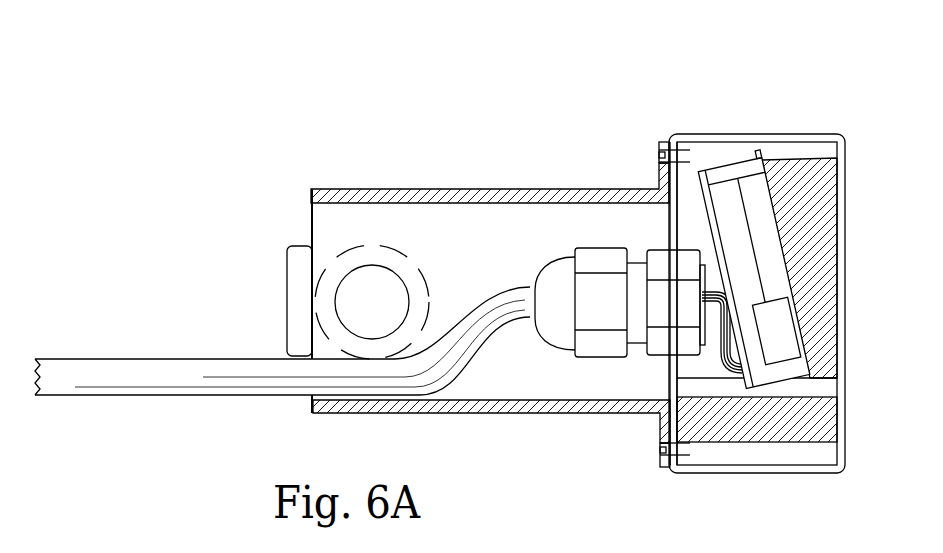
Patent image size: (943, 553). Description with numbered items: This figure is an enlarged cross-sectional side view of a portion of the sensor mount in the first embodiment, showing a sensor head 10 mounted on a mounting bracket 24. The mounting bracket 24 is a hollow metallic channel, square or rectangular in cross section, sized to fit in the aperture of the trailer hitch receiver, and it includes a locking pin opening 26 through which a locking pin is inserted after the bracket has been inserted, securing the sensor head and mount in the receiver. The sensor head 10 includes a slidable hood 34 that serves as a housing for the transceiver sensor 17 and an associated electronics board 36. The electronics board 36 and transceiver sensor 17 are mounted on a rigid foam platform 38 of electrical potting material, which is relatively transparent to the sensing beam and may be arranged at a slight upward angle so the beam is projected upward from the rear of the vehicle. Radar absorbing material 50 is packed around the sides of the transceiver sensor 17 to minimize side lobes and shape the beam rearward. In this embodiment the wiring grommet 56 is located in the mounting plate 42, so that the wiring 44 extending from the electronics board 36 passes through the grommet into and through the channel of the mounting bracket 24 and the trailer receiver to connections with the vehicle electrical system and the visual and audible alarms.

The sensor head 10 is at (739, 104).
The transceiver sensor 17 is at (731, 203).
The mounting bracket 24 is at (478, 413).
The locking pin opening 26 is at (403, 281).
The slidable hood 34 is at (793, 134).
The electronics board 36 is at (675, 205).
The rigid foam platform 38 is at (822, 247).
The mounting plate 42 is at (673, 214).
The wiring 44 is at (173, 378).
The radar absorbing material 50 is at (822, 415).
The wiring grommet 56 is at (633, 303).